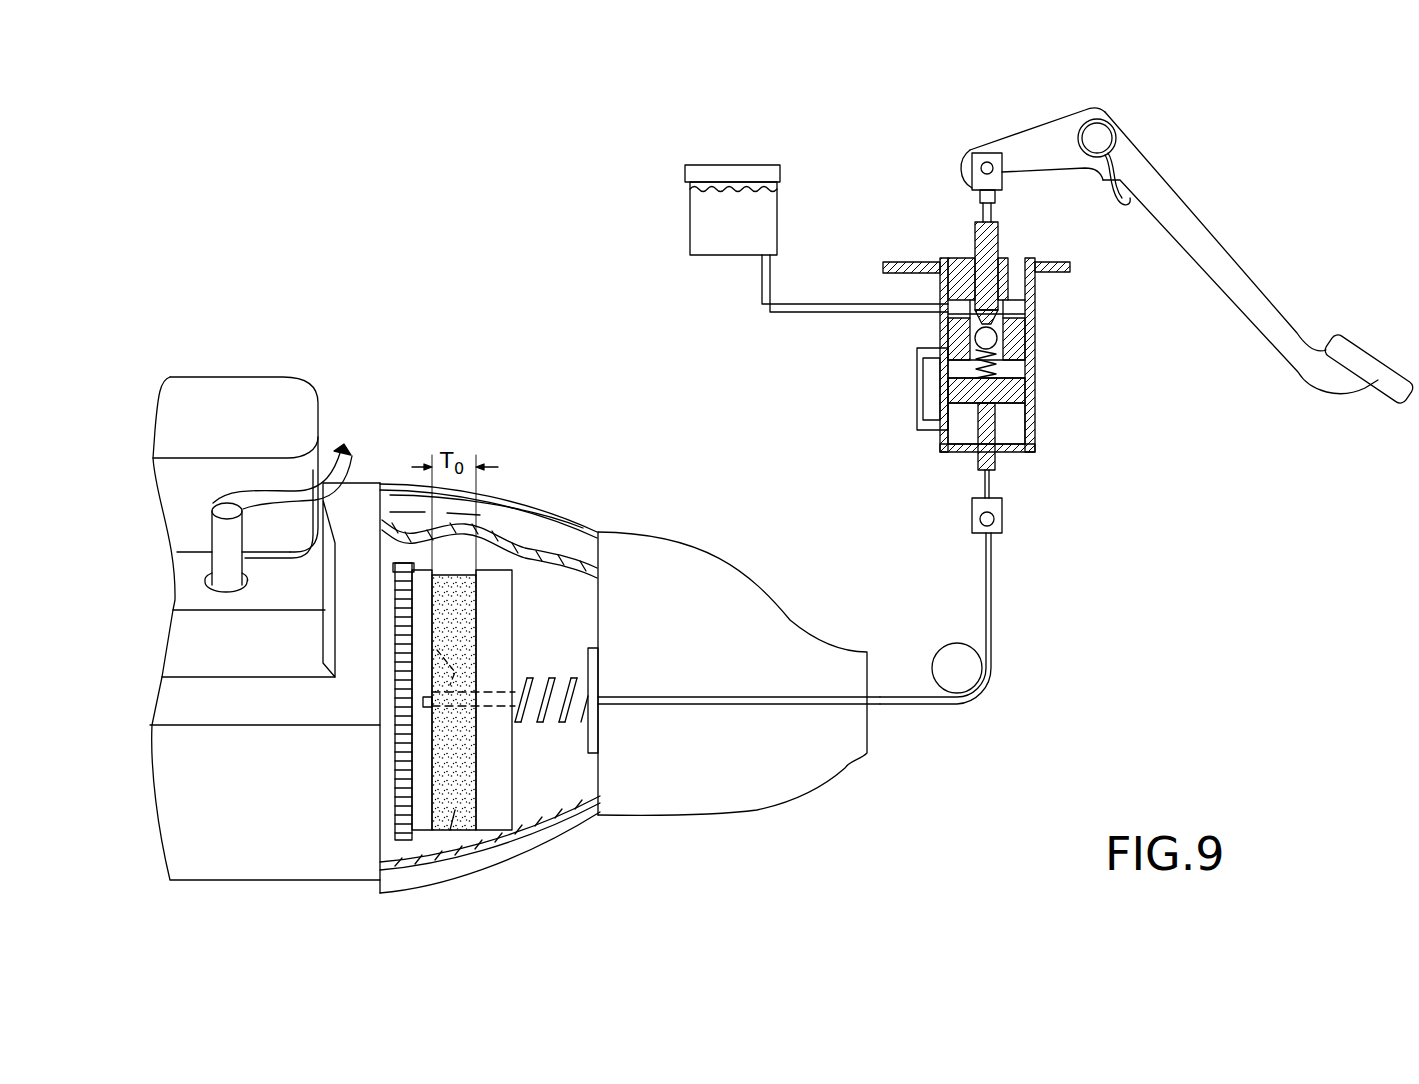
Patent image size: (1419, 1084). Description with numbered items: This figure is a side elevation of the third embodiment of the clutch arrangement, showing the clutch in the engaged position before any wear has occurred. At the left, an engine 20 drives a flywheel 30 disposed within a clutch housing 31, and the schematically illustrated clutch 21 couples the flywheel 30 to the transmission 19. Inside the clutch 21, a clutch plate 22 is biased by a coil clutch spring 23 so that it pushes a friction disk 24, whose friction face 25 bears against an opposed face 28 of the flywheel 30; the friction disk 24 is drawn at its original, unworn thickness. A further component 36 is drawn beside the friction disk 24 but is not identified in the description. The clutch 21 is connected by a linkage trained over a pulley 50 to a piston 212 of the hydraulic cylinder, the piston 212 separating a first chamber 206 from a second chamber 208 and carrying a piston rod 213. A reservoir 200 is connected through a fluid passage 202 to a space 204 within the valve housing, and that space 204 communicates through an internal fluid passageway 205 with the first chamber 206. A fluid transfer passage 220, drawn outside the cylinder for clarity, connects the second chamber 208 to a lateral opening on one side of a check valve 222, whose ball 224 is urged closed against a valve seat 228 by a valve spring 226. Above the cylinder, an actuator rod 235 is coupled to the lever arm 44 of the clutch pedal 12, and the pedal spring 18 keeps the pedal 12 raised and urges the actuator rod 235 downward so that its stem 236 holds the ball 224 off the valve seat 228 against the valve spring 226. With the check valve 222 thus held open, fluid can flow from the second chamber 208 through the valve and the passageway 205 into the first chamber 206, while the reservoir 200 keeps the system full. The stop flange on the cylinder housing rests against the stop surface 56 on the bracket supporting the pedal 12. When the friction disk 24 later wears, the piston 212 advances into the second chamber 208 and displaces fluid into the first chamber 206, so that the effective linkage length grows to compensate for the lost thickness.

The clutch pedal 12 is at (1352, 332).
The pedal spring 18 is at (1115, 172).
The lever arm 44 is at (1217, 240).
The engine 20 is at (256, 410).
The clutch 21 is at (548, 776).
The clutch plate 22 is at (522, 565).
The clutch spring 23 is at (572, 690).
The friction disk 24 is at (455, 810).
The friction face 25 is at (437, 800).
The opposed face 28 is at (440, 770).
The flywheel 30 is at (405, 565).
The clutch housing 31 is at (500, 580).
The wear indicator 36 is at (447, 685).
The transmission 19 is at (725, 565).
The pulley 50 is at (950, 660).
The stop surface 56 is at (905, 262).
The reservoir 200 is at (690, 230).
The fluid passage 202 is at (761, 295).
The space 204 is at (1012, 306).
The internal fluid passageway 205 is at (992, 343).
The first chamber 206 is at (1028, 392).
The second chamber 208 is at (1015, 432).
The piston 212 is at (1010, 428).
The piston rod 213 is at (980, 455).
The fluid transfer passage 220 is at (918, 422).
The check valve 222 is at (948, 330).
The ball 224 is at (1020, 372).
The valve spring 226 is at (950, 388).
The valve seat 228 is at (998, 336).
The actuator rod 235 is at (1000, 235).
The stem 236 is at (992, 312).